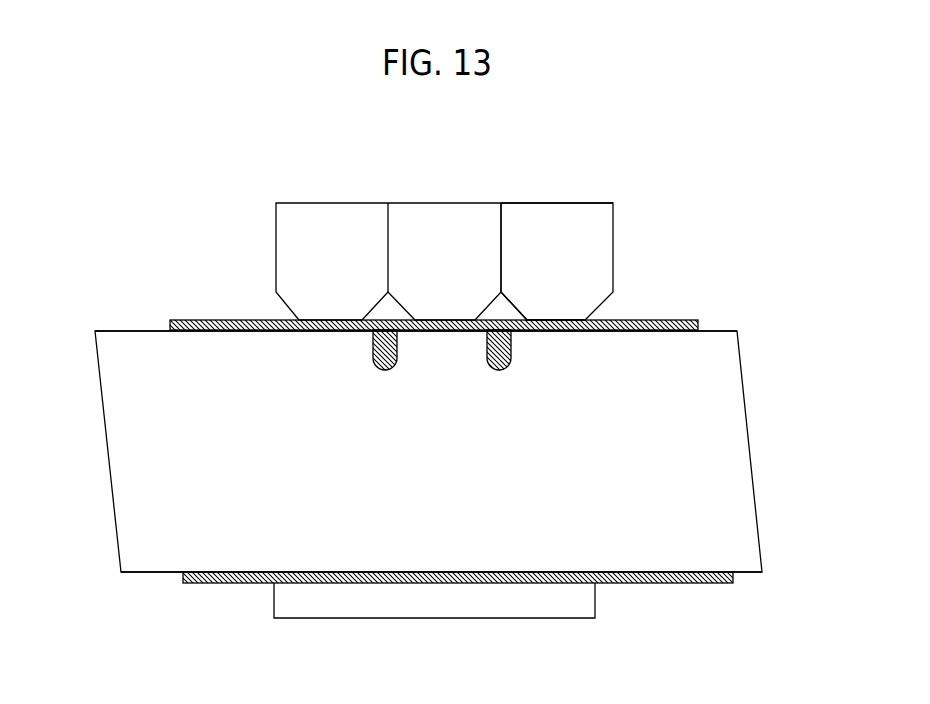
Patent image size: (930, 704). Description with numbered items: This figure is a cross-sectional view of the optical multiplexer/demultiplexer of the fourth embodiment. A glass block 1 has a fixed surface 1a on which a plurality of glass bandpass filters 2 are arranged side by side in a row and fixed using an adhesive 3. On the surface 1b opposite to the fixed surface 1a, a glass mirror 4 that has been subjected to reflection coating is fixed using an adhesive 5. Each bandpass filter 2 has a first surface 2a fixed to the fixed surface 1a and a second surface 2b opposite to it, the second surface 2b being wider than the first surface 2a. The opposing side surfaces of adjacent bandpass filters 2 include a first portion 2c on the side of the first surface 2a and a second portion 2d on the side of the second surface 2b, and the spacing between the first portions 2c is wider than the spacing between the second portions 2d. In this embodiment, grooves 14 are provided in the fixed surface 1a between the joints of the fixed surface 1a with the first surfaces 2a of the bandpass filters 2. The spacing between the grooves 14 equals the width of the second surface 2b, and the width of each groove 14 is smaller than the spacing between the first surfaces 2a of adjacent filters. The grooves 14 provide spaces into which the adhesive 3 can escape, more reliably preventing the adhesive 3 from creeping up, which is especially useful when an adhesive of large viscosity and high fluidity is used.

The block 1 is at (113, 452).
The fixed surface 1a is at (122, 327).
The surface opposite to the fixed surface 1b is at (142, 573).
The bandpass filter 2 is at (307, 237).
The first surface 2a is at (575, 331).
The second surface 2b is at (575, 203).
The first portion 2c is at (512, 322).
The second portion 2d is at (501, 245).
The adhesive 3 is at (199, 319).
The mirror 4 is at (298, 595).
The adhesive 5 is at (670, 582).
The groove 14 is at (385, 370).